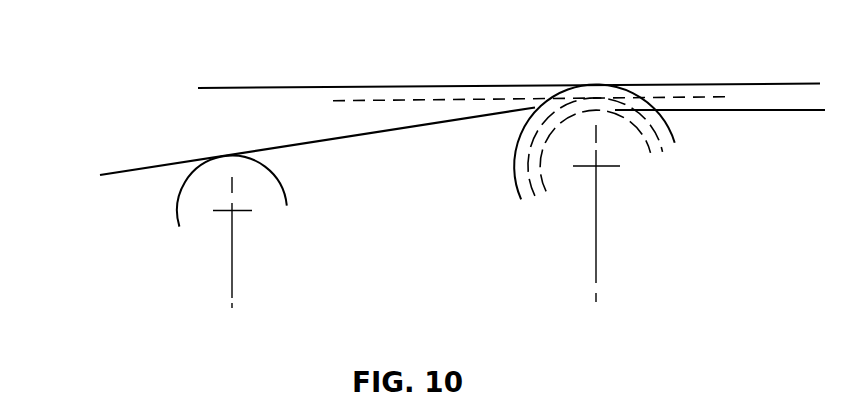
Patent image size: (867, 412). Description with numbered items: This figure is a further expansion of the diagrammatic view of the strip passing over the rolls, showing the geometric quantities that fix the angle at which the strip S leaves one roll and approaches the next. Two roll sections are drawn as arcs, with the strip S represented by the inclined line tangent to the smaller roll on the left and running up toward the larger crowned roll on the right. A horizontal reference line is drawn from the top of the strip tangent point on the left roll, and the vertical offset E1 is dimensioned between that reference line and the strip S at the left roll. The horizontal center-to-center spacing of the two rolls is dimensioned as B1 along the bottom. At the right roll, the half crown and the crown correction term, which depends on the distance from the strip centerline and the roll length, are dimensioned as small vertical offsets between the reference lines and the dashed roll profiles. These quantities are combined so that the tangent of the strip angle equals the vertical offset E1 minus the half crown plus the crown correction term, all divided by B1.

The strip S is at (142, 168).
The vertical offset E1 is at (232, 100).
The horizontal distance B1 is at (583, 276).